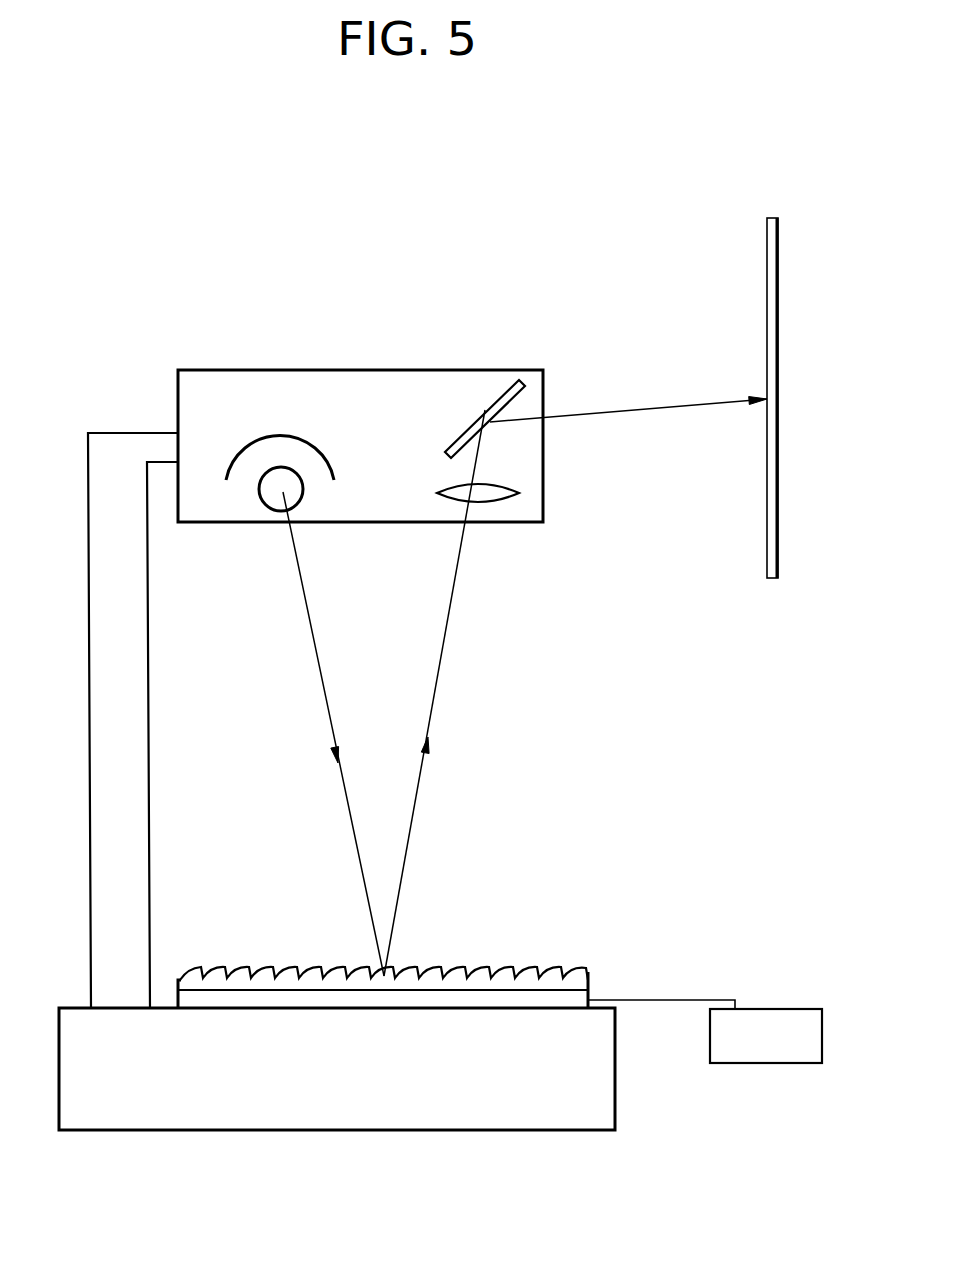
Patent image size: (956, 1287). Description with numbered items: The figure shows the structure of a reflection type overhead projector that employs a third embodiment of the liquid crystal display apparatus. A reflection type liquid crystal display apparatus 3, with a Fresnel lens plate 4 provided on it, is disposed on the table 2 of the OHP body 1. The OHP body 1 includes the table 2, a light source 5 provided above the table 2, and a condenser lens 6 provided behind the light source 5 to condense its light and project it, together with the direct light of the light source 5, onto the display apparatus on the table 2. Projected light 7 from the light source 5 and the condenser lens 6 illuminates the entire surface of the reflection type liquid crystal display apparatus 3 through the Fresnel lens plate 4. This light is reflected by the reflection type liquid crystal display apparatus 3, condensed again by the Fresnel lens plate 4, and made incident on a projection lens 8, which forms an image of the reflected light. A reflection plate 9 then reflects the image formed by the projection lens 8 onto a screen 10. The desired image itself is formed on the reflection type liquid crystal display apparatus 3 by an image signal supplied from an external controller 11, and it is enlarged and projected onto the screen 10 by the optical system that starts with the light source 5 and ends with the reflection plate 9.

The OHP body 1 is at (165, 1118).
The table 2 is at (568, 1010).
The reflection type liquid crystal display apparatus 3 is at (592, 1000).
The Fresnel lens plate 4 is at (579, 972).
The light source 5 is at (258, 467).
The condenser lens 6 is at (286, 447).
The projected light 7 is at (322, 697).
The projection lens 8 is at (517, 497).
The reflection plate 9 is at (485, 410).
The screen 10 is at (767, 567).
The external controller 11 is at (780, 1048).